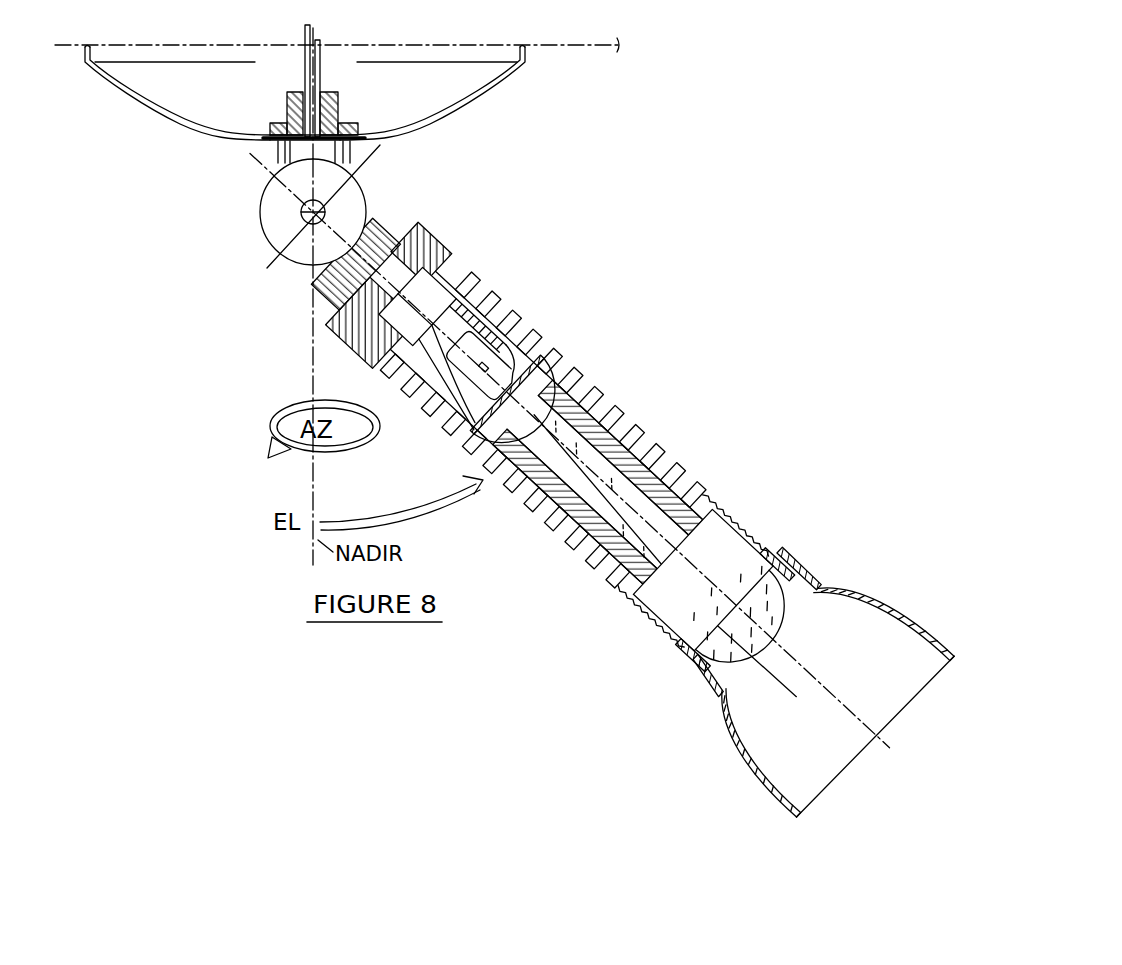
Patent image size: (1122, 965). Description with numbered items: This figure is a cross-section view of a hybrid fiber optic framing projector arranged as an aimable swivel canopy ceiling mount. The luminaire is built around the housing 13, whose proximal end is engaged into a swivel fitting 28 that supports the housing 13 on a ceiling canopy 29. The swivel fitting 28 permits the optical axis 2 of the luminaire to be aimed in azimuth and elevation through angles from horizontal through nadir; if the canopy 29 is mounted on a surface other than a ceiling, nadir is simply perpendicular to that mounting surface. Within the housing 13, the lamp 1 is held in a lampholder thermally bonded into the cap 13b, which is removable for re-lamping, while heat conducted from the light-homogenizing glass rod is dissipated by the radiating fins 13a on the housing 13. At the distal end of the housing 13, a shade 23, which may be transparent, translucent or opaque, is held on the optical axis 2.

The lamp 1 is at (592, 345).
The optical axis 2 is at (795, 667).
The housing 13 is at (680, 465).
The radiating fins 13a is at (597, 393).
The cap 13b is at (443, 240).
The shade 23 is at (740, 753).
The swivel fitting 28 is at (365, 186).
The ceiling canopy 29 is at (438, 116).